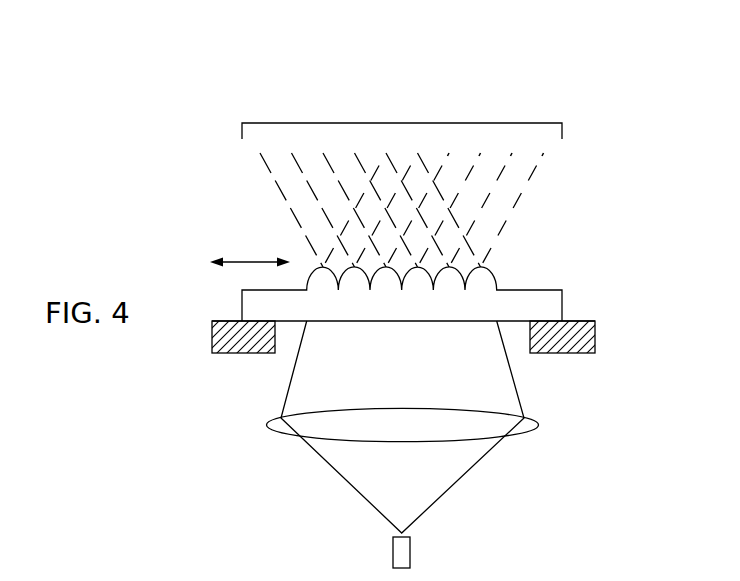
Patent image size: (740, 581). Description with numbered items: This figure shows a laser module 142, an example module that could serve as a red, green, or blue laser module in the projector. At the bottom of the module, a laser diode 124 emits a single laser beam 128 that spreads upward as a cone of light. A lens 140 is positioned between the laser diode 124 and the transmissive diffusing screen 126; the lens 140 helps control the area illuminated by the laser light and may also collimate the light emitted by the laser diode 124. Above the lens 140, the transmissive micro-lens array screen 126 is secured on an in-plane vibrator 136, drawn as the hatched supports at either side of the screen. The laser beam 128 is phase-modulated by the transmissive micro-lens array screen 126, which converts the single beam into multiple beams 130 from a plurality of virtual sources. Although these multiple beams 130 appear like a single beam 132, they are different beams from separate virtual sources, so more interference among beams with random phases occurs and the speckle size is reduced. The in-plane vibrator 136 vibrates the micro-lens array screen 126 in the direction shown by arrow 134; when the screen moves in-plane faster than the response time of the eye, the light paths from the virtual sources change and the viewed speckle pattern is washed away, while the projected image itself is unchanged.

The laser diode 124 is at (410, 553).
The transmissive micro-lens array screen 126 is at (521, 290).
The single beam 128 is at (340, 477).
The multiple beams 130 is at (528, 180).
The single beam 132 is at (521, 123).
The arrow 134 is at (250, 250).
The in-plane vibrator 136 is at (585, 353).
The lens 140 is at (420, 409).
The laser module 142 is at (288, 73).